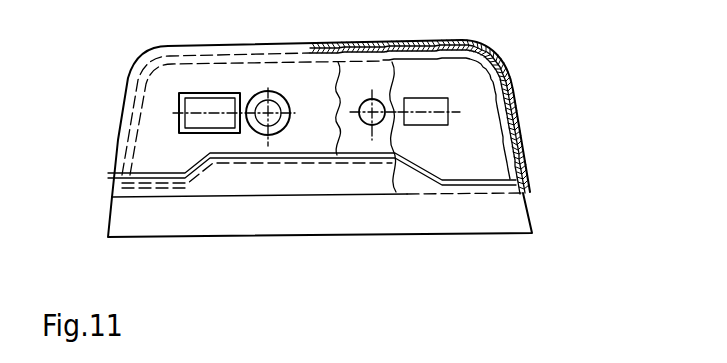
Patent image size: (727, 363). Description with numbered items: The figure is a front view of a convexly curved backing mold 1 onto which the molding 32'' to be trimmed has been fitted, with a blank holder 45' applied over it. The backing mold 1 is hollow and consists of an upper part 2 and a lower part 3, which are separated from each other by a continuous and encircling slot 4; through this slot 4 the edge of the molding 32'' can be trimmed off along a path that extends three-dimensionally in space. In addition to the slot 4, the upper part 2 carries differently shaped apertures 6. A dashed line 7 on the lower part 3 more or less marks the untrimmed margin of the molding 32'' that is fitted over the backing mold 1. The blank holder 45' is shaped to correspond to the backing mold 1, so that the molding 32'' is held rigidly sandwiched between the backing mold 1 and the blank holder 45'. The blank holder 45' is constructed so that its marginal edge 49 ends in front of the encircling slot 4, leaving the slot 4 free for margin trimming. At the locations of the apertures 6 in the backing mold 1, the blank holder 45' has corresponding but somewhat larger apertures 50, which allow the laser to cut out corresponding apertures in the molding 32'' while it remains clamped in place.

The backing mold 1 is at (111, 217).
The upper portion 2 is at (492, 126).
The lower portion 3 is at (513, 224).
The slot 4 is at (476, 182).
The apertures 6 is at (222, 93).
The dashed line 7 is at (240, 197).
The molding 32'' is at (368, 145).
The blank holder 45' is at (313, 110).
The marginal edge 49 is at (527, 173).
The apertures 50 is at (202, 93).